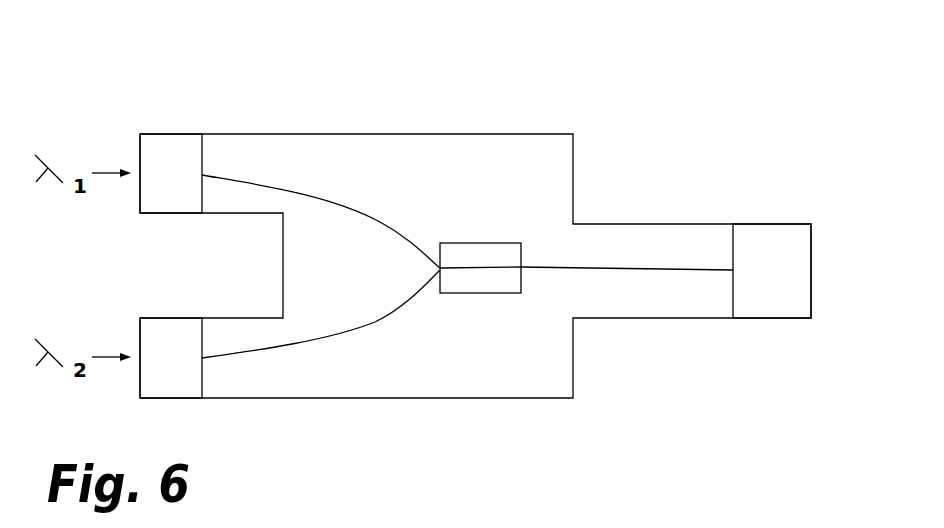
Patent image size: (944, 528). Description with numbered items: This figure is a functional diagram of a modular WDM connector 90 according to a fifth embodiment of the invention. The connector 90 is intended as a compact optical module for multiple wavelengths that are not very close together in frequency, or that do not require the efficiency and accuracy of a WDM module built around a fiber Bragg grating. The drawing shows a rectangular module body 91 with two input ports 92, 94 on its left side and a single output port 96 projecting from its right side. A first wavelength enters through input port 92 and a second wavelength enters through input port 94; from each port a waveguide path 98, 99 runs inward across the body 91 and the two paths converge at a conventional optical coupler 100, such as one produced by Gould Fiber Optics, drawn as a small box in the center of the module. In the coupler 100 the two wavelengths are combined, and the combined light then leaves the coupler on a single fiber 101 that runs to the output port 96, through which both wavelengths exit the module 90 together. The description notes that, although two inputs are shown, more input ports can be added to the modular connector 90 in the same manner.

The connector 90 is at (508, 52).
The substrate body 91 is at (520, 136).
The input port 92 is at (170, 155).
The input port 94 is at (160, 325).
The output port 96 is at (783, 242).
The first input waveguide 98 is at (278, 187).
The second input waveguide 99 is at (290, 349).
The optical coupler 100 is at (463, 242).
The single fiber 101 is at (610, 267).